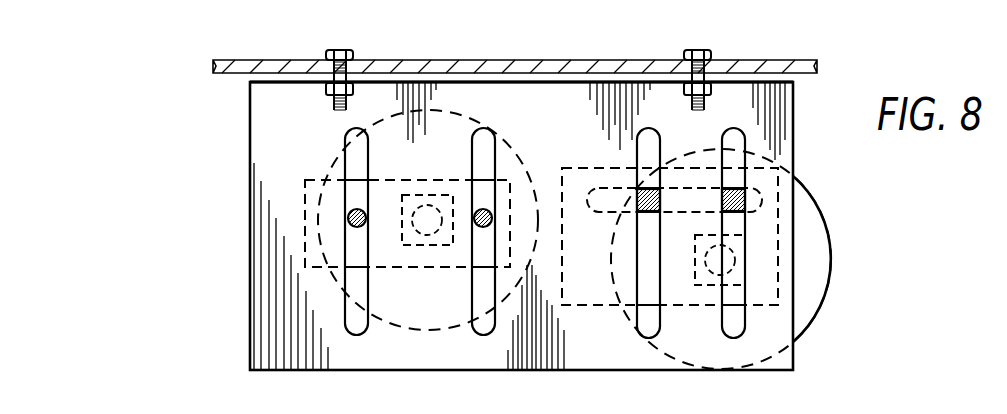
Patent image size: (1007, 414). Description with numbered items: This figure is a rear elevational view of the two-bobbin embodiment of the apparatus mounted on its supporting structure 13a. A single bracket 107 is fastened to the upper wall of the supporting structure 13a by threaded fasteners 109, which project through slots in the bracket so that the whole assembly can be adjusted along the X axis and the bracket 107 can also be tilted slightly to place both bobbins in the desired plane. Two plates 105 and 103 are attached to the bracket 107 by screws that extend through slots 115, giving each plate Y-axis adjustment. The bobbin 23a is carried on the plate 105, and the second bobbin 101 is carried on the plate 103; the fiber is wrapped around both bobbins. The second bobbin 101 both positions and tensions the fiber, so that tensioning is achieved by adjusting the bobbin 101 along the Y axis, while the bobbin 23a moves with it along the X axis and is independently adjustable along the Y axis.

The supporting structure 13a is at (795, 59).
The threaded fasteners 109 is at (337, 48).
The bracket 107 is at (545, 83).
The second bobbin 101 is at (821, 257).
The plate 105 is at (306, 270).
The plate 103 is at (585, 307).
The bobbin 23a is at (393, 325).
The slots 115 is at (363, 300).